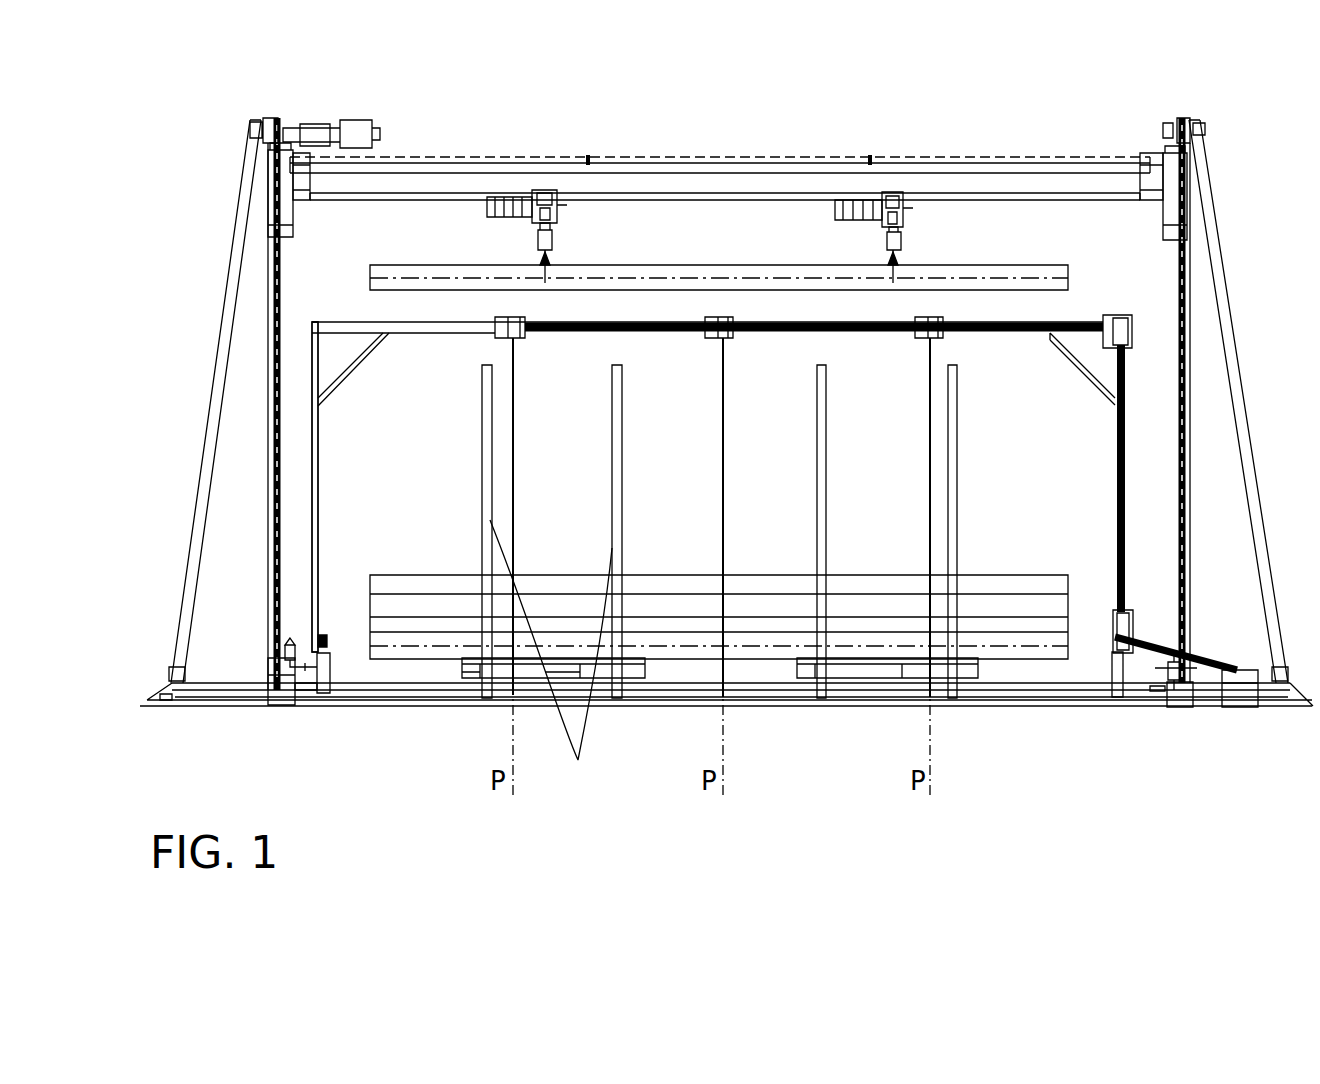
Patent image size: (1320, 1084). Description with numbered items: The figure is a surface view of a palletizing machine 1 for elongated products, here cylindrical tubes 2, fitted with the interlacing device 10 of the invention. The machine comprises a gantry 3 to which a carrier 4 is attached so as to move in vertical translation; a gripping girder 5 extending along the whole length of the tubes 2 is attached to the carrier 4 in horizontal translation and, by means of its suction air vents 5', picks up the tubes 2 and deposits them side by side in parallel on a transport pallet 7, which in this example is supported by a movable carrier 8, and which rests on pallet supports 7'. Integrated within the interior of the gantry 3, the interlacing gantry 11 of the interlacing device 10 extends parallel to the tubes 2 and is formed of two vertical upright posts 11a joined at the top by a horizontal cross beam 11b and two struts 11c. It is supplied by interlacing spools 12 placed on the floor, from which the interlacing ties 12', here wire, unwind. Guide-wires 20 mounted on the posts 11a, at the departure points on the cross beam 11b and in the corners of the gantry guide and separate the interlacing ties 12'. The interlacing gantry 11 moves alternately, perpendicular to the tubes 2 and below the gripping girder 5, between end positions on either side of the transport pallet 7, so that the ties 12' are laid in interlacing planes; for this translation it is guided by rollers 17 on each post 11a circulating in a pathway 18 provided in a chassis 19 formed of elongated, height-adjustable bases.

The palletizing machine 1 is at (205, 197).
The tubes 2 is at (1018, 277).
The gantry 3 is at (234, 268).
The carrier 4 is at (283, 180).
The gripping girder 5 is at (720, 132).
The air vents 5' is at (734, 236).
The transport pallet 7 is at (704, 727).
The support posts 7' is at (551, 658).
The movable carrier 8 is at (703, 688).
The interlacing device 10 is at (305, 332).
The interlacing gantry 11 is at (315, 418).
The vertical upright posts 11a is at (320, 447).
The horizontal cross beam 11b is at (468, 325).
The struts 11c is at (365, 353).
The interlacing spool 12 is at (1261, 733).
The interlacing tie 12' is at (859, 567).
The rollers 17 is at (333, 692).
The pathway 18 is at (330, 640).
The chassis 19 is at (310, 692).
The guide-wires 20 is at (512, 338).